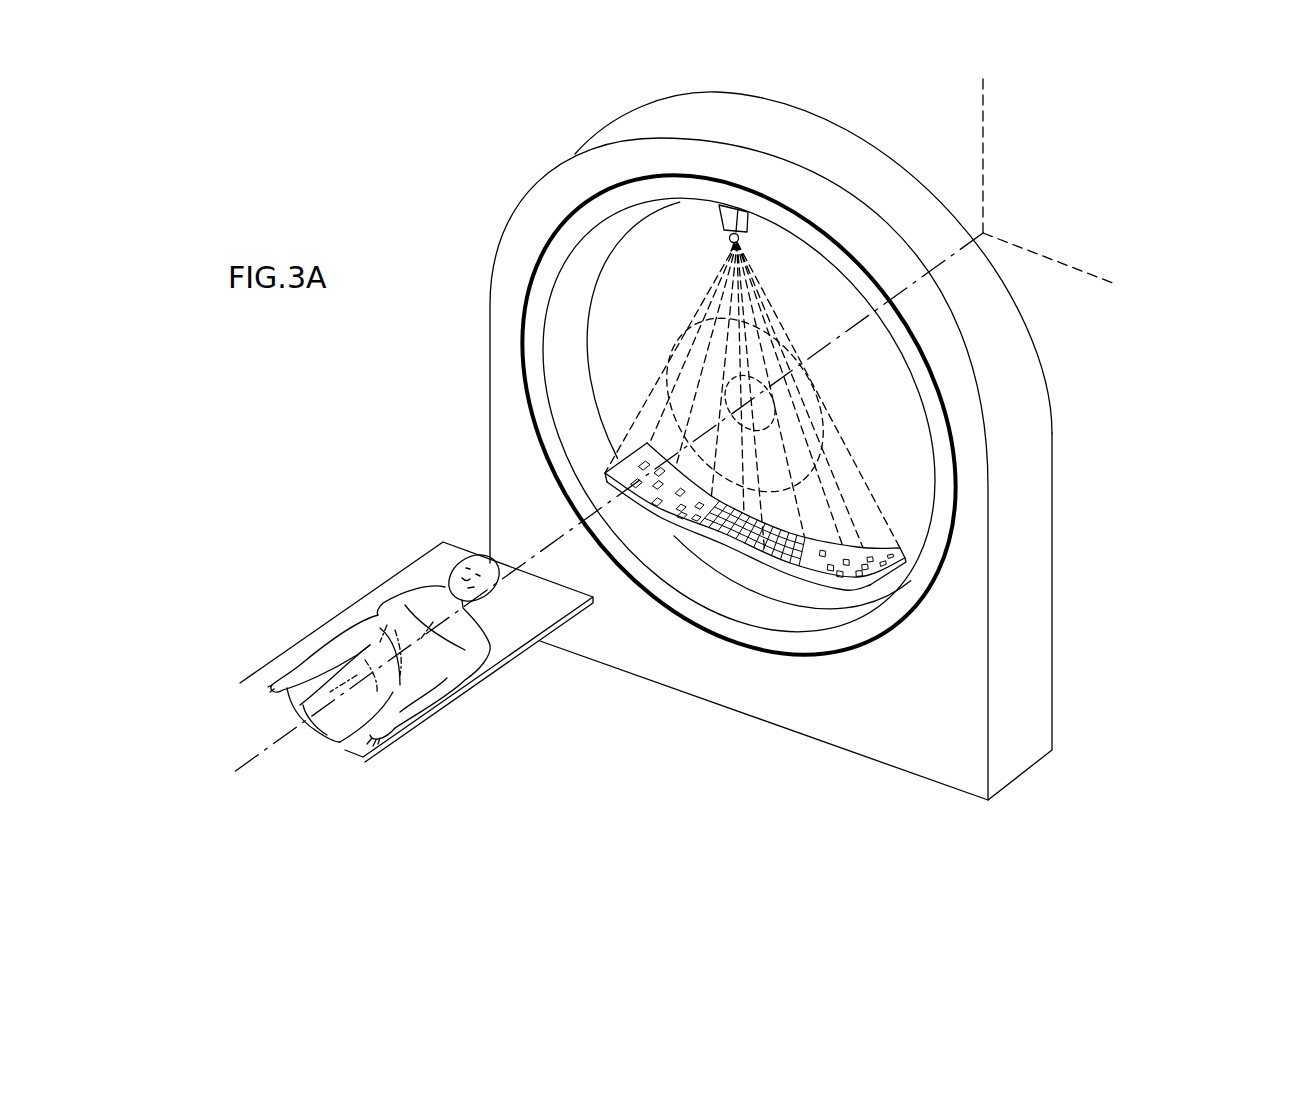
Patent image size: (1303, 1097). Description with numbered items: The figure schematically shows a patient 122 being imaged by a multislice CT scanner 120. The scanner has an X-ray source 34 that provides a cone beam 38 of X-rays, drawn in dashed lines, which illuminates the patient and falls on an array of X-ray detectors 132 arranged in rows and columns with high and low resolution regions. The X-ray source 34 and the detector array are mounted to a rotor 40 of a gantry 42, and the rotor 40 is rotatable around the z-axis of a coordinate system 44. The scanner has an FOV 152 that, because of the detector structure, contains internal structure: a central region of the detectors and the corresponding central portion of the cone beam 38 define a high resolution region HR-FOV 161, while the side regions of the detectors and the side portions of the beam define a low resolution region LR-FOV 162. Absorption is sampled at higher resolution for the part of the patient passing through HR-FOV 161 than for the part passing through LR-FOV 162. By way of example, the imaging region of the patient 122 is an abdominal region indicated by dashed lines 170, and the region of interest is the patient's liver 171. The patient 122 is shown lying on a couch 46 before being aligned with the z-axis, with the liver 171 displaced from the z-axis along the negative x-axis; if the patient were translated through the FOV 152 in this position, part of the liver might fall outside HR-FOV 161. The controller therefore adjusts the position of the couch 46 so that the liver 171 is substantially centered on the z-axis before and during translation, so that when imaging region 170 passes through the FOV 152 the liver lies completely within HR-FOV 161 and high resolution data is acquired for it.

The multislice CT scanner 120 is at (494, 163).
The X-ray source 34 is at (726, 230).
The coordinate system 44 is at (1060, 182).
The cone beam 38 is at (672, 373).
The low resolution region LR-FOV 162 is at (775, 405).
The high resolution region HR-FOV 161 is at (760, 423).
The FOV 152 is at (1138, 344).
The X-ray detectors 132 is at (797, 540).
The rotor 40 is at (763, 640).
The gantry 42 is at (935, 724).
The couch 46 is at (500, 640).
The patient 122 is at (420, 597).
The liver 171 is at (377, 620).
The imaging region 170 is at (417, 692).